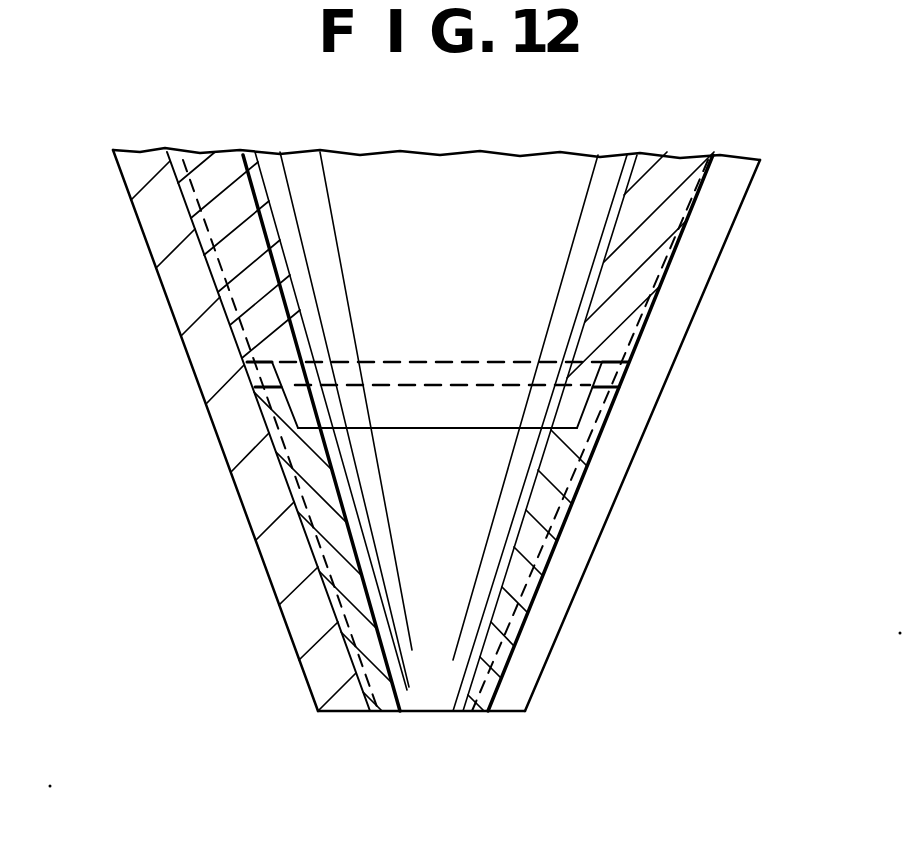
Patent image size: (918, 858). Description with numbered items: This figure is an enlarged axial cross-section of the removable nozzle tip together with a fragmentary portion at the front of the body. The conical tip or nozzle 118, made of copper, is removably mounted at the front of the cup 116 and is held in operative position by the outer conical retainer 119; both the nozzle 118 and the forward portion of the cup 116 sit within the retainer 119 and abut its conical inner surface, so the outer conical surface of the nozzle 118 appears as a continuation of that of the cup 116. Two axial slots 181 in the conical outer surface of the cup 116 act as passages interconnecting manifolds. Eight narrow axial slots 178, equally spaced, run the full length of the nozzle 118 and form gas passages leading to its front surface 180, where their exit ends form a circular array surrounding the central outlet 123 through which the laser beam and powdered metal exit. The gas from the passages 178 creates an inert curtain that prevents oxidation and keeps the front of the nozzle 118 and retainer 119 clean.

The cup 116 is at (657, 226).
The narrow axial slots 178 is at (330, 573).
The axial slots 181 is at (225, 277).
The conical tip or nozzle 118 is at (527, 540).
The outer conical retainer 119 is at (538, 640).
The front surface 180 is at (393, 708).
The central outlet 123 is at (440, 713).